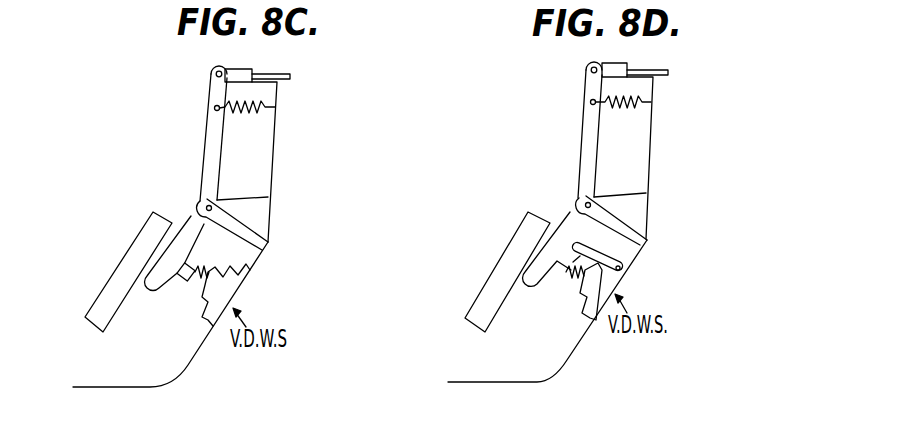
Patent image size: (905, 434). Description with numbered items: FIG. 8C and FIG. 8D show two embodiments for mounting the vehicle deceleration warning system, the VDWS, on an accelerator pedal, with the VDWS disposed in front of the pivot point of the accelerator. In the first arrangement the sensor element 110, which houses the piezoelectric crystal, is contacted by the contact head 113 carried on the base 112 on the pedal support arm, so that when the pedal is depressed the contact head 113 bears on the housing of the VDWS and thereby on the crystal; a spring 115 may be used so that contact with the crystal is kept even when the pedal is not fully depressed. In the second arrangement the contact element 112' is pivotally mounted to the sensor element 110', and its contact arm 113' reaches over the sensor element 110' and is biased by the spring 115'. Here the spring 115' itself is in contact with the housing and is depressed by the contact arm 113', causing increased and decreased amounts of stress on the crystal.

In FIG. 8C, the sensor element 110 is at (244, 293).
In FIG. 8C, the base 112 is at (162, 270).
In FIG. 8C, the contact head 113 is at (245, 250).
In FIG. 8C, the spring 115 is at (182, 288).
In FIG. 8D, the sensor element 110' is at (645, 274).
In FIG. 8D, the contact element 112' is at (630, 241).
In FIG. 8D, the contact arm 113' is at (558, 218).
In FIG. 8D, the spring 115' is at (556, 302).